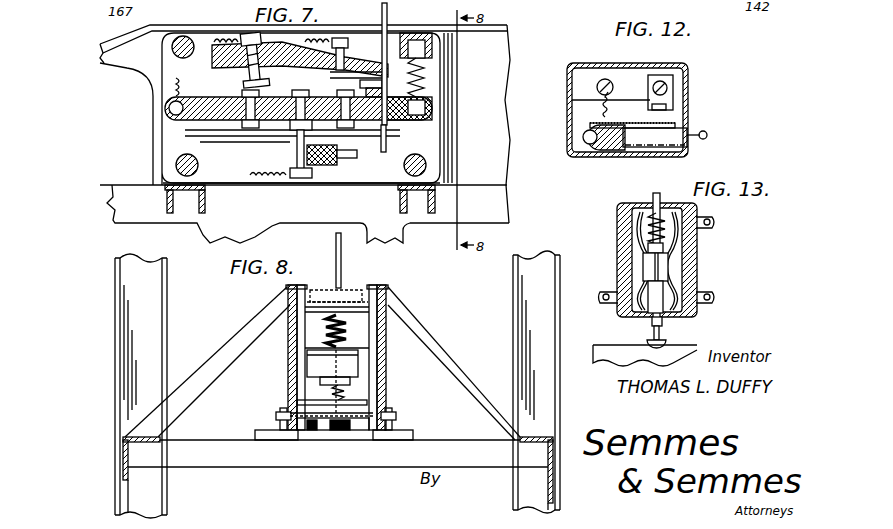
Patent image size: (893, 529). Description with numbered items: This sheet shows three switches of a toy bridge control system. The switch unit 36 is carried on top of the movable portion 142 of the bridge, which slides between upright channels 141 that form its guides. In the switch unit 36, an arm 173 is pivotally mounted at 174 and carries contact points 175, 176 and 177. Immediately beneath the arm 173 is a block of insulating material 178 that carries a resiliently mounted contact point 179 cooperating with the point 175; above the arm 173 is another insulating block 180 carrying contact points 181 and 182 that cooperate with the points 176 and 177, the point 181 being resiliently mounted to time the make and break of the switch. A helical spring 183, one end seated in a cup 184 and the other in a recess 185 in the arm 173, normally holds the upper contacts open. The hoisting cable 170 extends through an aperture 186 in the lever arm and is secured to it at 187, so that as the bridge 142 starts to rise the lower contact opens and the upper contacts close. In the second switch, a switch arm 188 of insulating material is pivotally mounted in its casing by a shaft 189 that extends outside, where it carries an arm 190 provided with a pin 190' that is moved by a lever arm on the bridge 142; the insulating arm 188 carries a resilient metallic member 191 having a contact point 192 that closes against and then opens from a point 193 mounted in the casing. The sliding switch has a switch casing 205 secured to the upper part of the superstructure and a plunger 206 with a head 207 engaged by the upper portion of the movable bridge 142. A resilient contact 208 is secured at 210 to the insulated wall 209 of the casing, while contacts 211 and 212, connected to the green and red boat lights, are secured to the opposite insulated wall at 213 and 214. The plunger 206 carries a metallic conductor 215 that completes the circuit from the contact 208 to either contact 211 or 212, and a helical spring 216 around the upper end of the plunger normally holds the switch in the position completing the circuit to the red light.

In FIG. 7, the switch unit 36 is at (152, 125).
In FIG. 8, the switch unit 36 is at (287, 368).
In FIG. 8, the upright channels 141 is at (116, 336).
In FIG. 7, the movable portion of the bridge 142 is at (112, 197).
In FIG. 8, the movable portion of the bridge 142 is at (226, 462).
In FIG. 7, the hoisting cable 170 is at (388, 15).
In FIG. 8, the hoisting cable 170 is at (341, 266).
In FIG. 7, the arm 173 is at (432, 110).
In FIG. 8, the arm 173 is at (352, 364).
In FIG. 7, the pivot 174 is at (170, 108).
In FIG. 7, the contact point 175 is at (348, 84).
In FIG. 7, the contact point 176 is at (250, 96).
In FIG. 7, the contact point 177 is at (346, 95).
In FIG. 7, the block of insulating material 178 is at (340, 152).
In FIG. 8, the block of insulating material 178 is at (318, 402).
In FIG. 7, the resiliently mounted contact point 179 is at (300, 138).
In FIG. 7, the insulating block 180 is at (353, 48).
In FIG. 8, the insulating block 180 is at (315, 318).
In FIG. 7, the contact point 181 is at (243, 84).
In FIG. 7, the contact point 182 is at (372, 80).
In FIG. 7, the helical spring 183 is at (420, 75).
In FIG. 7, the cup 184 is at (430, 34).
In FIG. 8, the cup 184 is at (355, 292).
In FIG. 7, the recess 185 is at (432, 102).
In FIG. 7, the aperture 186 is at (389, 92).
In FIG. 7, the cable attachment 187 is at (384, 152).
In FIG. 12, the switch arm 188 is at (613, 150).
In FIG. 12, the shaft 189 is at (583, 150).
In FIG. 12, the arm 190 is at (708, 121).
In FIG. 12, the pin 190' is at (727, 137).
In FIG. 12, the resilient metallic member 191 is at (655, 124).
In FIG. 12, the contact point 192 is at (658, 122).
In FIG. 13, the contact point 192 is at (593, 350).
In FIG. 12, the contact point 193 is at (675, 98).
In FIG. 13, the switch casing 205 is at (617, 218).
In FIG. 13, the plunger 206 is at (647, 323).
In FIG. 13, the head 207 is at (672, 341).
In FIG. 13, the resilient contact 208 is at (632, 245).
In FIG. 13, the insulated wall 209 is at (630, 263).
In FIG. 13, the securing point 210 is at (606, 303).
In FIG. 13, the contact 211 is at (695, 240).
In FIG. 13, the contact 212 is at (682, 275).
In FIG. 13, the securing point 213 is at (698, 206).
In FIG. 13, the securing point 214 is at (697, 315).
In FIG. 13, the metallic conductor 215 is at (668, 267).
In FIG. 13, the helical spring 216 is at (651, 246).